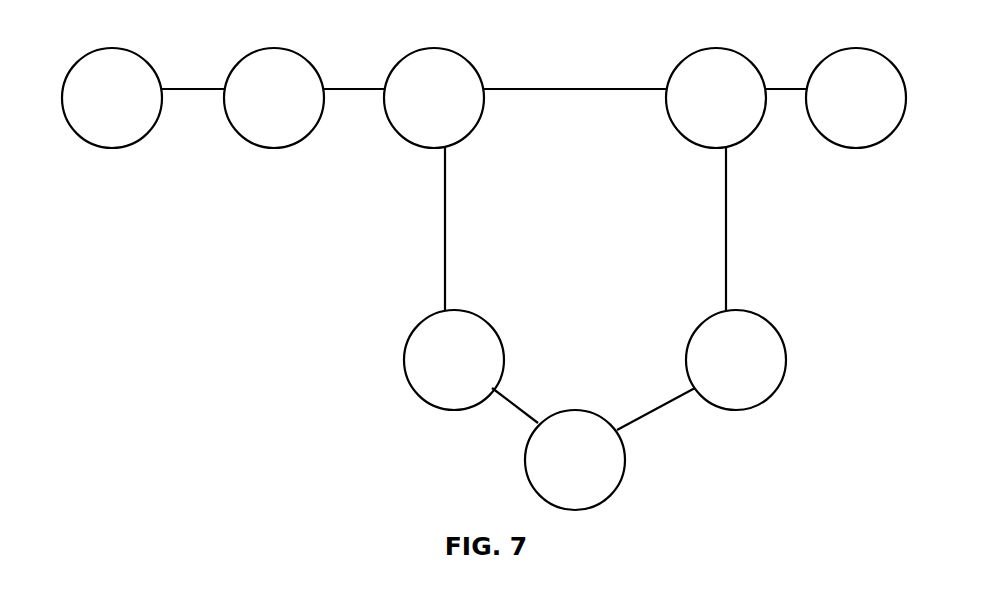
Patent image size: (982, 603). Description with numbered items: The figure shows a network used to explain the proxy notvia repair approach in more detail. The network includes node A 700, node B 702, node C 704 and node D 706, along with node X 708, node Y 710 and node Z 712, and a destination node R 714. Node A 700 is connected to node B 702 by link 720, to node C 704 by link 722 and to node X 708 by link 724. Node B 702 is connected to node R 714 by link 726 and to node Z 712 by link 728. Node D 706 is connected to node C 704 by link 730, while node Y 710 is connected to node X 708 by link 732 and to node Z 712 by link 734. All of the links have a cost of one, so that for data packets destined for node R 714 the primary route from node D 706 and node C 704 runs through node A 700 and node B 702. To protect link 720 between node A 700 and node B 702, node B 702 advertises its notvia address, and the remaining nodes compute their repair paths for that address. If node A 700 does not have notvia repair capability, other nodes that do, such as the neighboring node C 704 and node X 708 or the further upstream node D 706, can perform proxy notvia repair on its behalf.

The node A 700 is at (434, 98).
The node B 702 is at (716, 98).
The node C 704 is at (274, 98).
The node D 706 is at (112, 98).
The node X 708 is at (454, 360).
The node Y 710 is at (575, 460).
The node Z 712 is at (736, 360).
The node R 714 is at (856, 98).
The link 720 is at (565, 88).
The link 722 is at (343, 88).
The link 724 is at (442, 268).
The link 726 is at (785, 88).
The link 728 is at (723, 288).
The link 730 is at (202, 88).
The link 732 is at (523, 410).
The link 734 is at (645, 410).